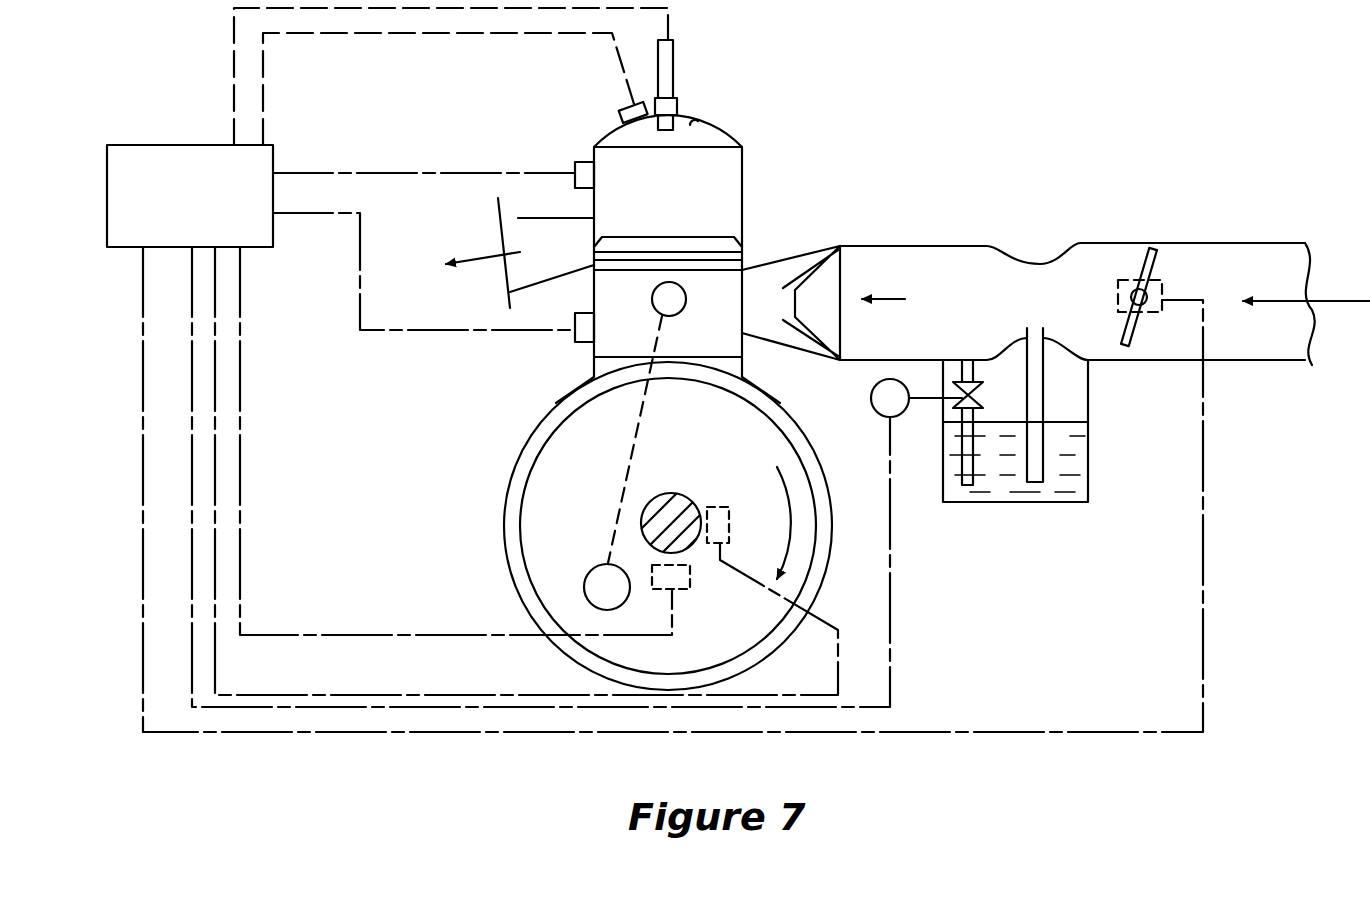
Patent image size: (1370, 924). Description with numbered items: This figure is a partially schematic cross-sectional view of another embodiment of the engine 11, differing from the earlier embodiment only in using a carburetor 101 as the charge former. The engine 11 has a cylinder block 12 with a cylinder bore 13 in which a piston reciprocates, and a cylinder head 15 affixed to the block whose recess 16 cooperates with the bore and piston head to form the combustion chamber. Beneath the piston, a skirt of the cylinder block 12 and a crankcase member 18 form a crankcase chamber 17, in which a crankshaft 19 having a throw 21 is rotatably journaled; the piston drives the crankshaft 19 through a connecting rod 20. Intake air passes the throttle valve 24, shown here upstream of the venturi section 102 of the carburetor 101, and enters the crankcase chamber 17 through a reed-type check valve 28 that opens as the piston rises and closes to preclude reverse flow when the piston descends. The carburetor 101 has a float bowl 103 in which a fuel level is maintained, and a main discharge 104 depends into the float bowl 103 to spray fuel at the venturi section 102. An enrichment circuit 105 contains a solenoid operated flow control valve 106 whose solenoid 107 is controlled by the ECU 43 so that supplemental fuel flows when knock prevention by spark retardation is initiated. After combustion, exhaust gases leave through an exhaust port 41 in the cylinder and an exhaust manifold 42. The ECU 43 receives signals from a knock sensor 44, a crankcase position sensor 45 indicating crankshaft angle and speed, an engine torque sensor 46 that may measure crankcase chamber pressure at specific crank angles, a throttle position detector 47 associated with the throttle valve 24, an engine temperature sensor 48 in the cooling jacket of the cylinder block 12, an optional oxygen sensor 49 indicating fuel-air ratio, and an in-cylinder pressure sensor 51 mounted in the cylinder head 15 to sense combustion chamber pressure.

The engine 11 is at (806, 106).
The cylinder block 12 is at (737, 215).
The cylinder bore 13 is at (735, 173).
The cylinder head 15 is at (725, 120).
The recess 16 is at (703, 117).
The crankcase chamber 17 is at (510, 490).
The crankcase member 18 is at (820, 597).
The crankshaft 19 is at (660, 492).
The connecting rod 20 is at (637, 450).
The throw 21 is at (590, 566).
The throttle valve 24 is at (1140, 250).
The reed-type check valve 28 is at (813, 255).
The exhaust port 41 is at (580, 258).
The exhaust manifold 42 is at (498, 218).
The ECU 43 is at (150, 145).
The knock sensor 44 is at (575, 160).
The crankcase position sensor 45 is at (676, 590).
The engine torque sensor 46 is at (716, 507).
The throttle position detector 47 is at (1162, 292).
The engine temperature sensor 48 is at (575, 340).
The oxygen sensor 49 is at (586, 180).
The in-cylinder pressure sensor 51 is at (622, 105).
The carburetor 101 is at (1106, 446).
The venturi section 102 is at (1013, 252).
The float bowl 103 is at (943, 490).
The main discharge 104 is at (1043, 378).
The enrichment circuit 105 is at (943, 455).
The solenoid operated flow control valve 106 is at (955, 405).
The solenoid 107 is at (868, 392).